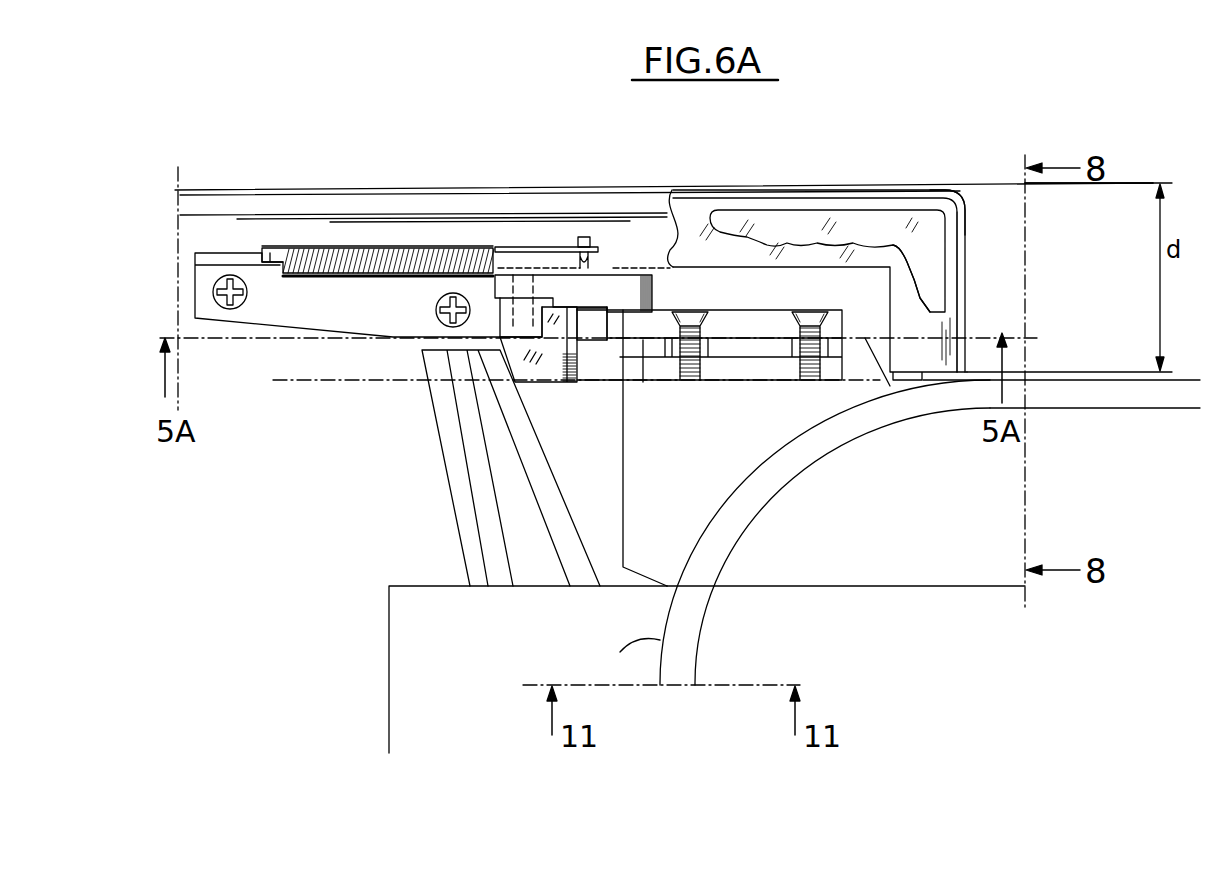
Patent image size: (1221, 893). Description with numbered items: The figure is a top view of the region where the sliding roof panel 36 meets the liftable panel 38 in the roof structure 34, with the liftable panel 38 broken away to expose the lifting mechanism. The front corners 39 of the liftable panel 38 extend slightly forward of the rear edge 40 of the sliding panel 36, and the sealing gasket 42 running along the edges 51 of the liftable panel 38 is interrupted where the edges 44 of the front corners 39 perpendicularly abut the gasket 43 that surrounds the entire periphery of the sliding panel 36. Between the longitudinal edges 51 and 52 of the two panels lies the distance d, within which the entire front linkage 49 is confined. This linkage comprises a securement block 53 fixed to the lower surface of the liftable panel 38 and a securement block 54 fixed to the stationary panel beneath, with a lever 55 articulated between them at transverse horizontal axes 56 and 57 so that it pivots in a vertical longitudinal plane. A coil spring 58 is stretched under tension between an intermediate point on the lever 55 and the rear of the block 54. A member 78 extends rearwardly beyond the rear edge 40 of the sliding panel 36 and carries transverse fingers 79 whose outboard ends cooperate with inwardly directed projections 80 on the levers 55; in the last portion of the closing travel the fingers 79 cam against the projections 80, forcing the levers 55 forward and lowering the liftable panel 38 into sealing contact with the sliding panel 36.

The roof structure 34 is at (1110, 253).
The sliding roof panel 36 is at (985, 521).
The liftable panel 38 is at (940, 244).
The front corners 39 is at (960, 182).
The rear edge 40 is at (662, 638).
The sealing gasket 42 is at (800, 200).
The gasket 43 is at (1050, 392).
The edges 44 is at (953, 288).
The front linkage 49 is at (577, 232).
The longitudinal edges 51 is at (320, 189).
The longitudinal edges 52 is at (1112, 377).
The securement block 53 is at (780, 328).
The securement block 54 is at (400, 322).
The lever 55 is at (592, 293).
The transverse horizontal axis 56 is at (637, 345).
The transverse horizontal axis 57 is at (523, 280).
The coil spring 58 is at (412, 247).
The member 78 is at (402, 621).
The transverse fingers 79 is at (458, 487).
The projections 80 is at (547, 364).